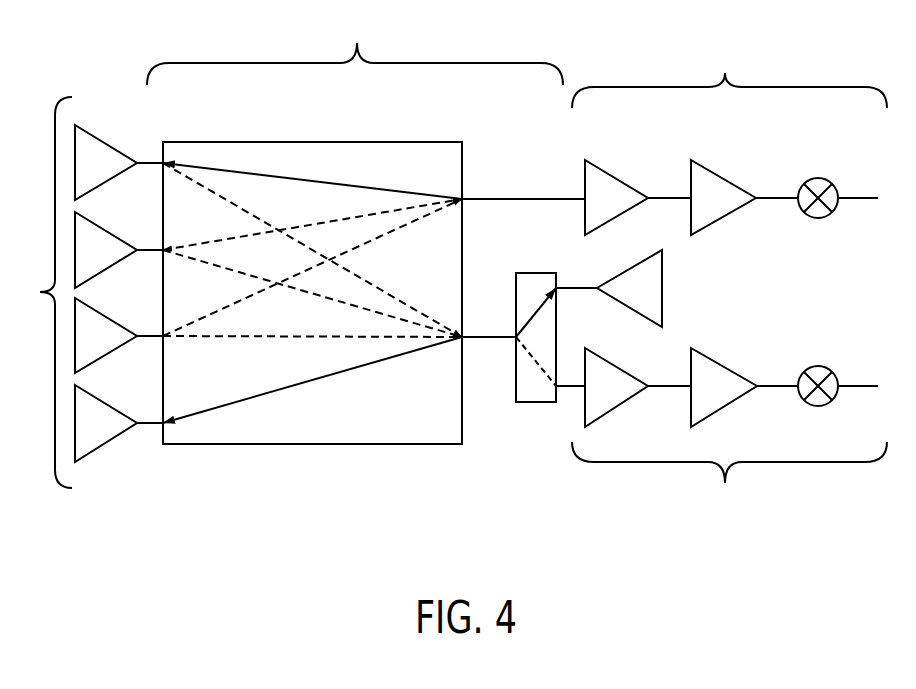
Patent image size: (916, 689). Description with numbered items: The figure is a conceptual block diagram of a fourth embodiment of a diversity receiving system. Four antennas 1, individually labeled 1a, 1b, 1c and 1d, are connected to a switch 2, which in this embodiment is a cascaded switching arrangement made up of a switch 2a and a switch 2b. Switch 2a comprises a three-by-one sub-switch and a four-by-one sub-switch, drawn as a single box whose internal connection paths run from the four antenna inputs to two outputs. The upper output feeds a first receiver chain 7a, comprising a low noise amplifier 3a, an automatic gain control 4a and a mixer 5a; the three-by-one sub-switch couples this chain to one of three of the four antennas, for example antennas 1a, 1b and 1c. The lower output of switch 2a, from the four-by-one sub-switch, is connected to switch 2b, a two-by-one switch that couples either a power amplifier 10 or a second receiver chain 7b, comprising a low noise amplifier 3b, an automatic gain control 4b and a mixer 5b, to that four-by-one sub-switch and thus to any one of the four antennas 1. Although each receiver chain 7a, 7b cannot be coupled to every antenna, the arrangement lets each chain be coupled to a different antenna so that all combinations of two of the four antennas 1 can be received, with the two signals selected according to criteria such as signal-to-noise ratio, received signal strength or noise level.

The antennas 1 is at (46, 292).
The antenna 1a is at (117, 150).
The antenna 1b is at (118, 238).
The antenna 1c is at (118, 324).
The antenna 1d is at (118, 411).
The switch 2 is at (355, 50).
The switch 2a is at (338, 142).
The switch 2b is at (545, 402).
The low noise amplifier 3a is at (618, 177).
The low noise amplifier 3b is at (623, 367).
The automatic gain control 4a is at (725, 177).
The automatic gain control 4b is at (727, 365).
The mixer 5a is at (820, 178).
The mixer 5b is at (820, 366).
The receiver chain 7a is at (729, 73).
The receiver chain 7b is at (729, 478).
The power amplifier 10 is at (662, 288).